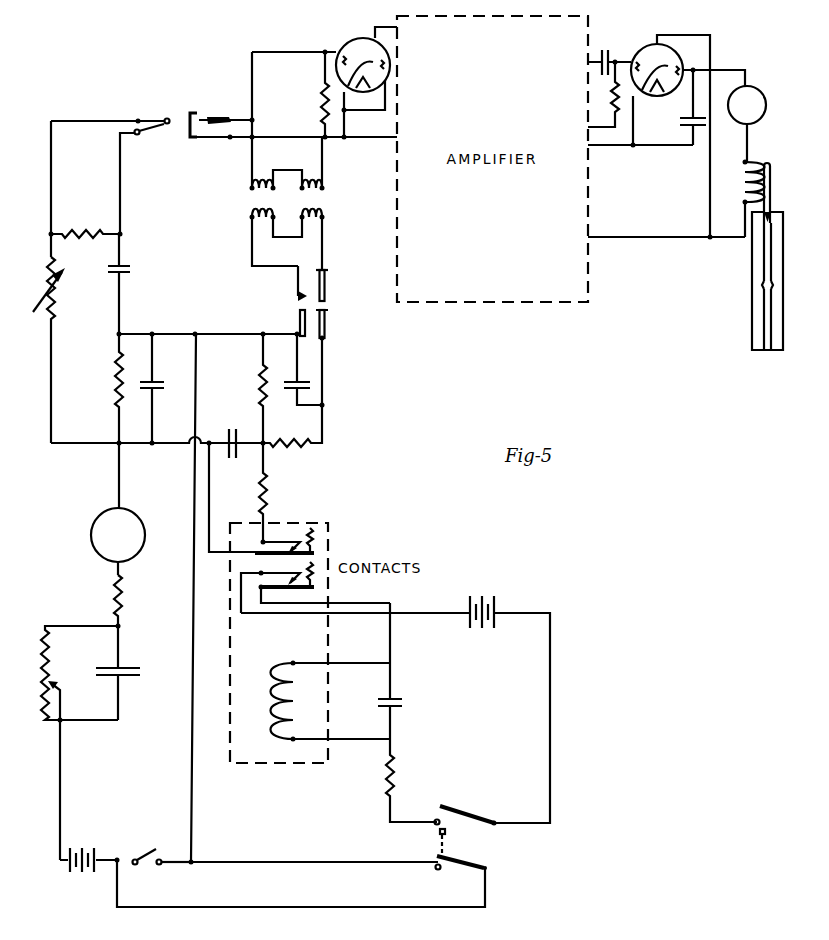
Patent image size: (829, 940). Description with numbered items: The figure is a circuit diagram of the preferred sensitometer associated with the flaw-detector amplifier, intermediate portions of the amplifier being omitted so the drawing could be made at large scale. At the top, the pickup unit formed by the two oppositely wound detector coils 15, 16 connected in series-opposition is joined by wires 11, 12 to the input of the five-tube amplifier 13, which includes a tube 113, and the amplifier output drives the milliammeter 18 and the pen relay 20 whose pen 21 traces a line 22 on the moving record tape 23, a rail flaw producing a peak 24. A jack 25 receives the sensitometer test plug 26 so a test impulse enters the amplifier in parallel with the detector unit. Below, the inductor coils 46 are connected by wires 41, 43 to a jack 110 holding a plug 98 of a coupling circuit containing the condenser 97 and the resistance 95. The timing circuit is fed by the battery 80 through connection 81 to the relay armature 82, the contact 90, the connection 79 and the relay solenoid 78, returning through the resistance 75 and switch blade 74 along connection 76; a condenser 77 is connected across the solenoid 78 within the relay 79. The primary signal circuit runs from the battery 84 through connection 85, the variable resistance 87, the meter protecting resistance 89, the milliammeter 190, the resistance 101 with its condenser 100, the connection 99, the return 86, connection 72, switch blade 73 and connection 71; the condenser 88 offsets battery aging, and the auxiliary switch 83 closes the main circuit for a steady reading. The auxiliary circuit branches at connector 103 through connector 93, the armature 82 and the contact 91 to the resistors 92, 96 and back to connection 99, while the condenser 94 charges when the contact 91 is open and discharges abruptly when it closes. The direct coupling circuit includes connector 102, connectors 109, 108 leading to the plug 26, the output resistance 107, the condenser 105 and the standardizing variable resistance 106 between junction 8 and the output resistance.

The junction 8 is at (117, 445).
The wire 11 is at (250, 157).
The wire 12 is at (326, 157).
The amplifier 13 is at (595, 40).
The detector coil 15 is at (250, 188).
The detector coil 16 is at (324, 184).
The milliammeter 18 is at (751, 83).
The pen relay 20 is at (744, 178).
The pen 21 is at (775, 186).
The line 22 is at (764, 321).
The record tape 23 is at (752, 301).
The peak 24 is at (764, 286).
The jack 25 is at (227, 115).
The test plug 26 is at (154, 120).
The wire 41 is at (250, 247).
The wire 43 is at (324, 247).
The inductor coils 46 is at (308, 224).
The connection 71 is at (256, 906).
The connection 72 is at (245, 865).
The switch blade 73 is at (453, 869).
The switch blade 74 is at (457, 820).
The resistance 75 is at (380, 786).
The conductor 76 is at (551, 741).
The condenser 77 is at (396, 709).
The solenoid 78 is at (297, 689).
The connection 79 is at (312, 627).
The battery 80 is at (473, 625).
The connection 81 is at (415, 610).
The armature 82 is at (316, 588).
The auxiliary switch 83 is at (139, 866).
The battery 84 is at (70, 880).
The connection 85 is at (61, 779).
The return 86 is at (189, 442).
The variable resistance 87 is at (43, 684).
The condenser 88 is at (120, 668).
The meter protecting resistance 89 is at (110, 595).
The contact 90 is at (309, 580).
The contact 91 is at (326, 543).
The resistor 92 is at (256, 503).
The connector 93 is at (209, 494).
The condenser 94 is at (233, 432).
The resistance 95 is at (297, 426).
The resistor 96 is at (257, 389).
The condenser 97 is at (306, 383).
The plug 98 is at (325, 327).
The connection 99 is at (229, 337).
The condenser 100 is at (165, 372).
The resistance 101 is at (112, 380).
The connector 102 is at (100, 451).
The connector 103 is at (123, 449).
The condenser 105 is at (122, 268).
The variable resistance 106 is at (52, 320).
The output resistance 107 is at (72, 245).
The connector 108 is at (120, 162).
The connector 109 is at (52, 170).
The jack 110 is at (325, 294).
The amplifier tube 113 is at (340, 50).
The milliammeter 190 is at (91, 537).